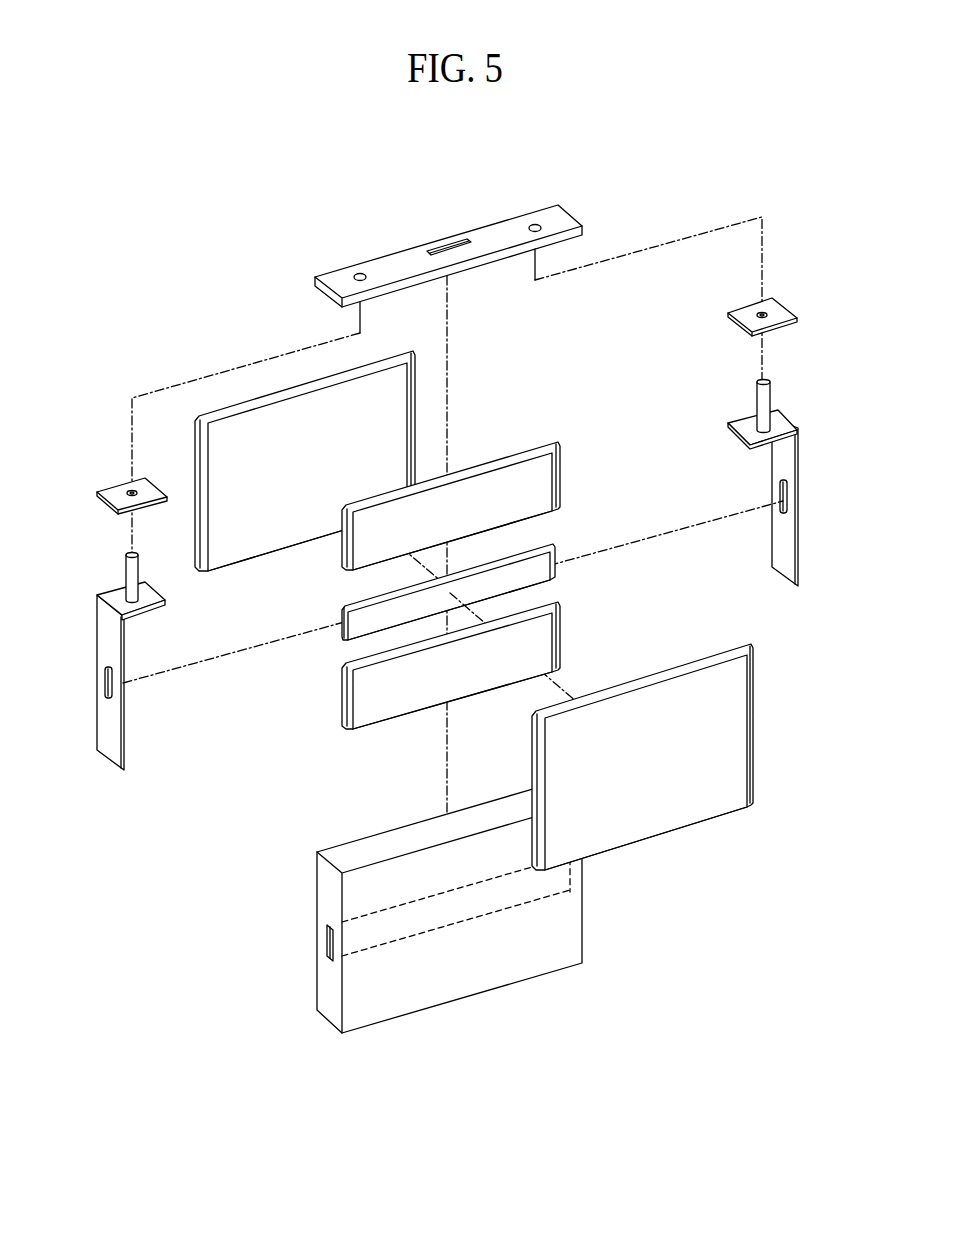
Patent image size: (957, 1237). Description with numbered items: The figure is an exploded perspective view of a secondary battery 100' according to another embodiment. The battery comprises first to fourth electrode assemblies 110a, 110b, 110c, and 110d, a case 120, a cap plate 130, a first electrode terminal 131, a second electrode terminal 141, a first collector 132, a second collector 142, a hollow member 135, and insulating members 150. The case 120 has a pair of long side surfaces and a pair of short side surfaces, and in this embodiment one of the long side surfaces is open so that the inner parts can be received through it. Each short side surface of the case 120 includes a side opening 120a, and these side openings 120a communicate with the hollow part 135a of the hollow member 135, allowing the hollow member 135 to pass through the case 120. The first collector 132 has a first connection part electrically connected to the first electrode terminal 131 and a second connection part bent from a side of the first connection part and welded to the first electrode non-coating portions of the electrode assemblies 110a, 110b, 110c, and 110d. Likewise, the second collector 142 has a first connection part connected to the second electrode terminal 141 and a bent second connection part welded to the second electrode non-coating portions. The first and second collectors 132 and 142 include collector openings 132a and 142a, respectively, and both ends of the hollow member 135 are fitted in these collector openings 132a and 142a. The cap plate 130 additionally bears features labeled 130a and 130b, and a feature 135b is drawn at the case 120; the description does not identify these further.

The secondary battery 100' is at (93, 171).
The first electrode assembly 110a is at (657, 825).
The second electrode assembly 110b is at (247, 553).
The third electrode assembly 110c is at (507, 468).
The fourth electrode assembly 110d is at (377, 713).
The case 120 is at (453, 988).
The side opening 120a is at (327, 940).
The cap plate 130 is at (407, 252).
The coupling hole 130a is at (358, 273).
The coupling hole 130b is at (532, 225).
The first electrode terminal 131 is at (130, 570).
The first collector 132 is at (106, 636).
The collector opening 132a is at (102, 683).
The hollow member 135 is at (538, 573).
The hollow part 135a is at (342, 620).
The groove of case 135b is at (508, 901).
The second electrode terminal 141 is at (766, 399).
The second collector 142 is at (790, 461).
The collector opening 142a is at (790, 505).
The insulating member 150 is at (120, 484).